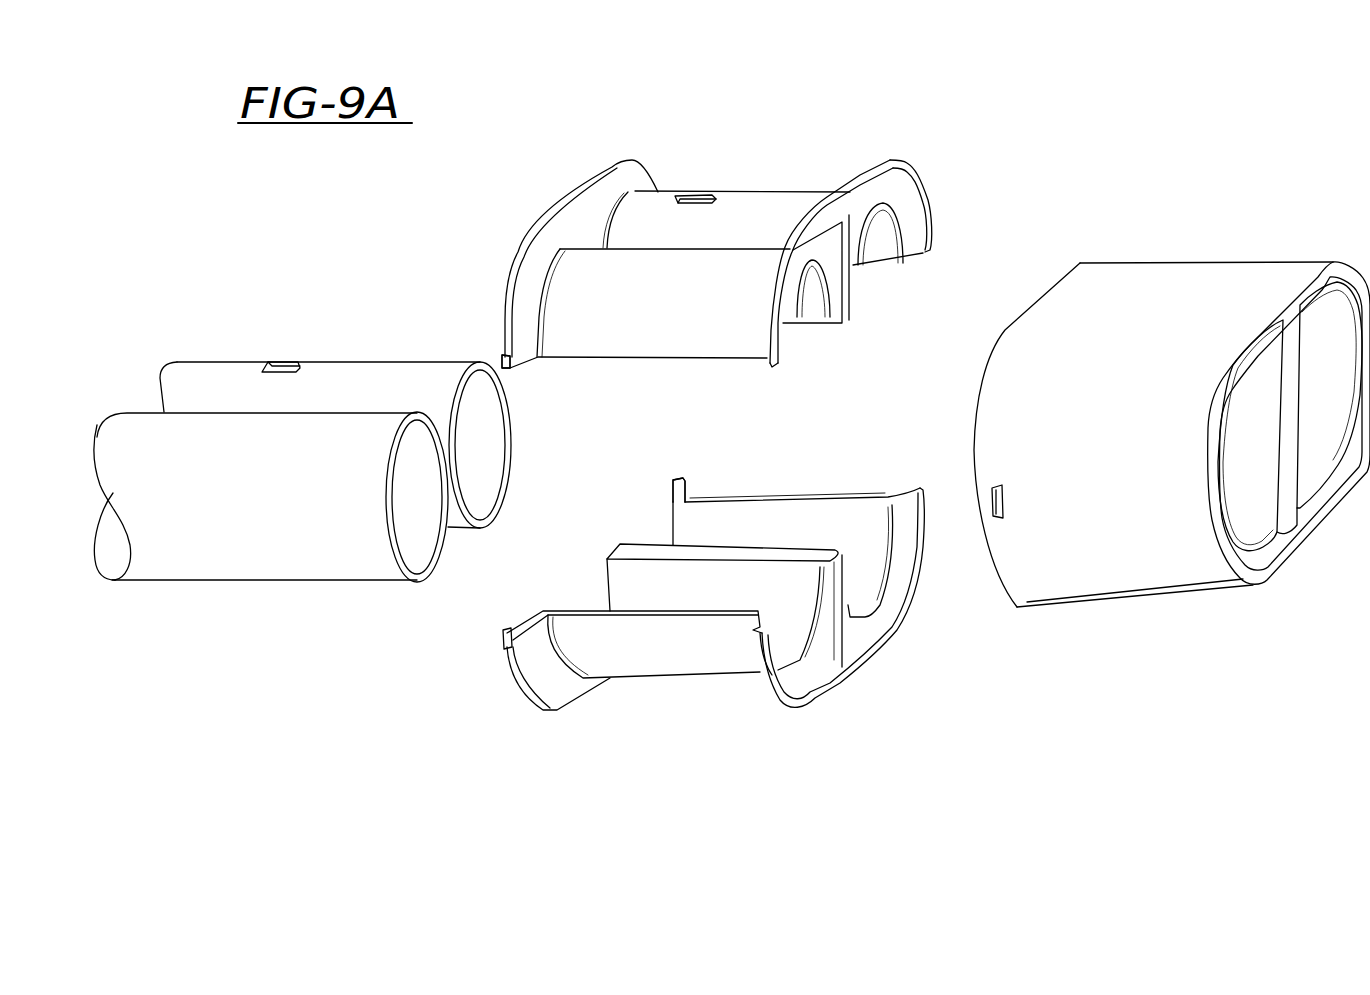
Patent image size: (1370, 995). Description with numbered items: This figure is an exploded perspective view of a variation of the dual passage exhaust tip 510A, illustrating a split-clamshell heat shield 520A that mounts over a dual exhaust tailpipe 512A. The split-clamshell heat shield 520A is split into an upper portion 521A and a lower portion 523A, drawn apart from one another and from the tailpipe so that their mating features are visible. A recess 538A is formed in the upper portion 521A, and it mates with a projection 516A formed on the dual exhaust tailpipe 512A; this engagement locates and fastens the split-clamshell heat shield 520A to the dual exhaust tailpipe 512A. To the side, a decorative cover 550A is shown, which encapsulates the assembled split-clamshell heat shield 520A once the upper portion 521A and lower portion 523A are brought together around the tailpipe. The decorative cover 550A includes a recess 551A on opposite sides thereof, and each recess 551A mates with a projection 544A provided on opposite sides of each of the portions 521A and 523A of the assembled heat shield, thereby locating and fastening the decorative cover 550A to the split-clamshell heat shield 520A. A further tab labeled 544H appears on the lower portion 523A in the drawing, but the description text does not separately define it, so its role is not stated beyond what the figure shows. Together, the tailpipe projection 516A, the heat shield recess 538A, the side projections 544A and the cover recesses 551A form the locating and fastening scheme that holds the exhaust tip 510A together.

The dual passage exhaust tip 510A is at (303, 272).
The dual exhaust tailpipe 512A is at (166, 388).
The projection 516A is at (270, 362).
The split-clamshell heat shield 520A is at (885, 483).
The upper portion 521A is at (773, 205).
The lower portion 523A is at (700, 665).
The recess 538A is at (690, 198).
The projection 544A is at (510, 370).
The tab 544H is at (683, 482).
The decorative cover 550A is at (1122, 300).
The recess 551A is at (993, 516).